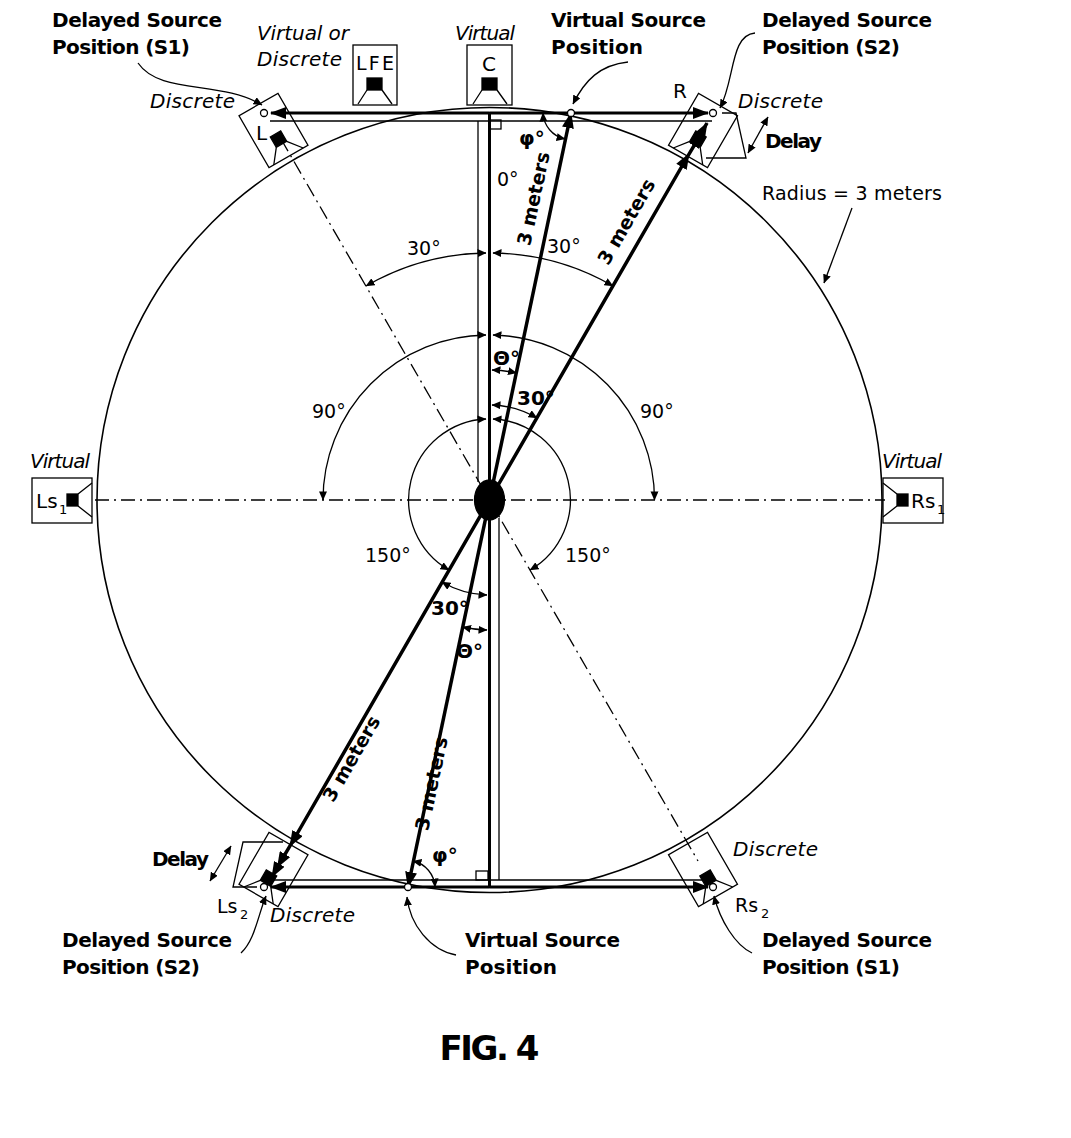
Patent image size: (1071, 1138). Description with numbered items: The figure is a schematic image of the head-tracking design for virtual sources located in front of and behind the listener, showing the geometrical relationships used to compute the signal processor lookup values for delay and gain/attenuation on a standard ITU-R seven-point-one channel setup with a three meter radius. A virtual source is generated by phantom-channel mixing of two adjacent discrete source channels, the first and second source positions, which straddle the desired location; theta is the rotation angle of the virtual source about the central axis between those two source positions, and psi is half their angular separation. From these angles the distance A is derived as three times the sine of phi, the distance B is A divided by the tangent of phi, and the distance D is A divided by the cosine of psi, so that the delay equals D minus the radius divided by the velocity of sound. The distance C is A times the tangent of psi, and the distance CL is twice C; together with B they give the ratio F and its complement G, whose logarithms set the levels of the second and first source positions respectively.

The distance A is at (477, 262).
The distance B is at (543, 110).
The distance C is at (616, 110).
The distance D is at (588, 338).
The distance CL is at (468, 121).